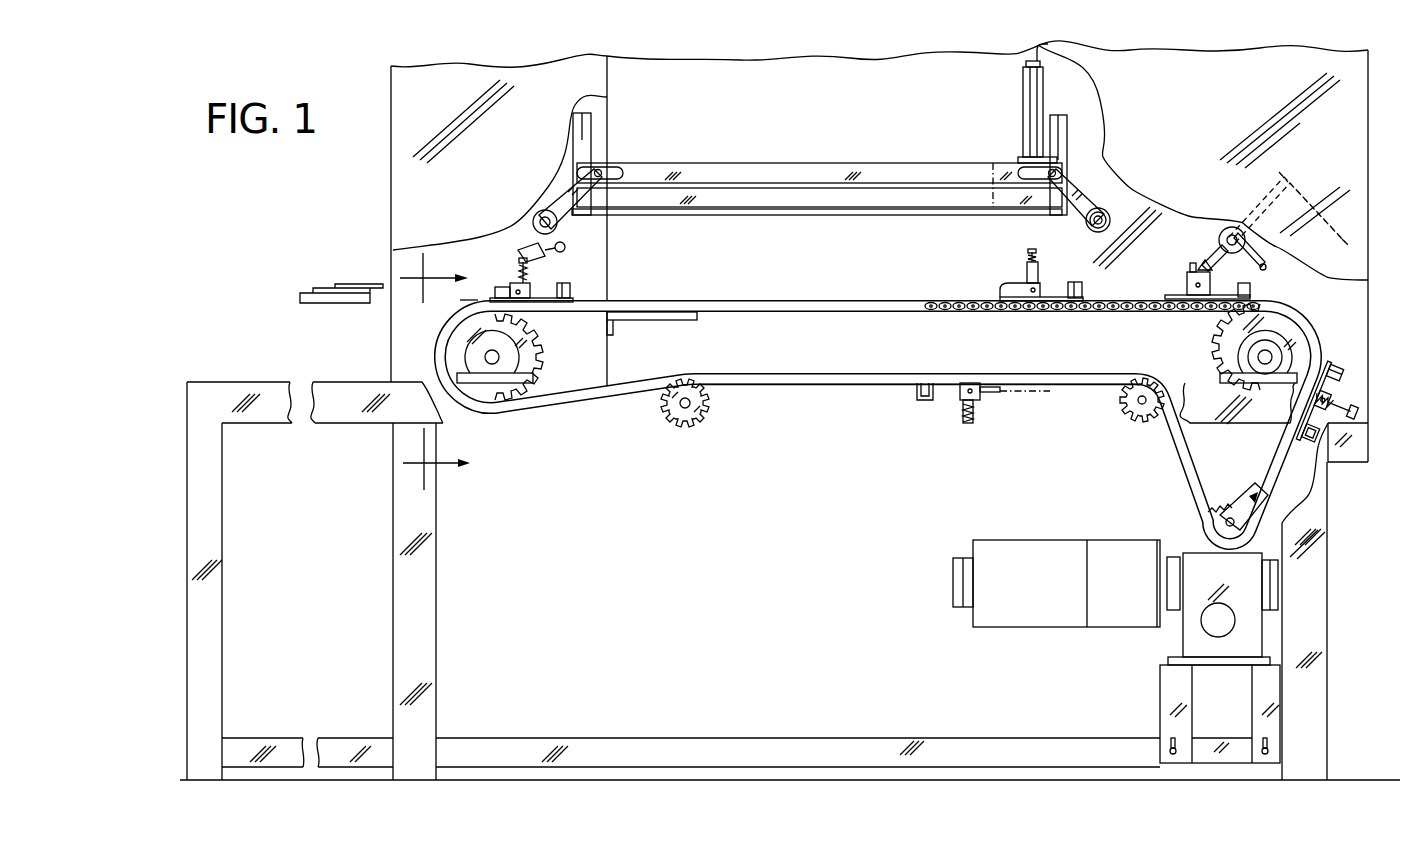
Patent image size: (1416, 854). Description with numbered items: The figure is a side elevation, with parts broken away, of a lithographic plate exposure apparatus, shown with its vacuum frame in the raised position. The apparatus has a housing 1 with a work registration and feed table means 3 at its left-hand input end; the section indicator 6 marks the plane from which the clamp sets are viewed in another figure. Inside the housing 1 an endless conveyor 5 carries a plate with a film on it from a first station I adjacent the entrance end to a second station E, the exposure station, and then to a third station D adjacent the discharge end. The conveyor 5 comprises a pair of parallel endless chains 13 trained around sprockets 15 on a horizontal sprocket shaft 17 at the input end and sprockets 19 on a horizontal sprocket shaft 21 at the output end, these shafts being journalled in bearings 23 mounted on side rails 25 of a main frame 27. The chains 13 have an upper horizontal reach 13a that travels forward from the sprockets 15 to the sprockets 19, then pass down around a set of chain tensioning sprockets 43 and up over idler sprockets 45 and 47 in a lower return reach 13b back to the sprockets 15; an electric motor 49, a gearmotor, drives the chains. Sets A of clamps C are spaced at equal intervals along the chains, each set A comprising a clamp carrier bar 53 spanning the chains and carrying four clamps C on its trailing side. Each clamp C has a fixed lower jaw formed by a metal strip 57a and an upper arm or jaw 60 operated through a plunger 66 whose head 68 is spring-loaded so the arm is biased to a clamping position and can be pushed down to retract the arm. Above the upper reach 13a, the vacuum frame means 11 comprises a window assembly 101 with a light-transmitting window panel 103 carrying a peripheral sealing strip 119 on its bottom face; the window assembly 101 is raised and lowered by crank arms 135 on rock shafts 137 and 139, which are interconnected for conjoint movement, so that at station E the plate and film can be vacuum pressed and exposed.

The housing 1 is at (390, 155).
The work registration and feed table means 3 is at (308, 280).
The conveyor 5 is at (866, 389).
The section line 6- 6 is at (435, 373).
The vacuum frame means 11 is at (826, 148).
The endless chains 13 is at (492, 407).
The upper horizontal reach 13a is at (783, 277).
The lower return reach 13b is at (803, 375).
The sprockets 15 is at (520, 321).
The horizontal sprocket shaft 17 is at (500, 359).
The sprockets 19 is at (1240, 317).
The horizontal sprocket shaft 21 is at (1240, 355).
The bearings 23 is at (533, 368).
The side rails 25 is at (1230, 417).
The main frame 27 is at (1330, 630).
The chain tensioning sprockets 43 is at (1220, 513).
The idler sprockets 45 is at (1123, 413).
The idler sprockets 47 is at (700, 413).
The electric motor 49 is at (1033, 630).
The clamp carrier bar 53 is at (927, 380).
The metal strip 57a is at (977, 380).
The upper arm or jaw 60 is at (1005, 397).
The plunger 66 is at (963, 410).
The head 68 is at (1338, 425).
The window assembly 101 is at (900, 190).
The window panel 103 is at (732, 210).
The peripheral sealing strip 119 is at (900, 205).
The crank arms 135 is at (577, 175).
The rock shaft 137 is at (533, 213).
The rock shaft 139 is at (1110, 212).
The set of clamps A is at (573, 288).
The clamps C is at (492, 283).
The third station D is at (1227, 278).
The second station E is at (878, 277).
The first station I is at (548, 278).